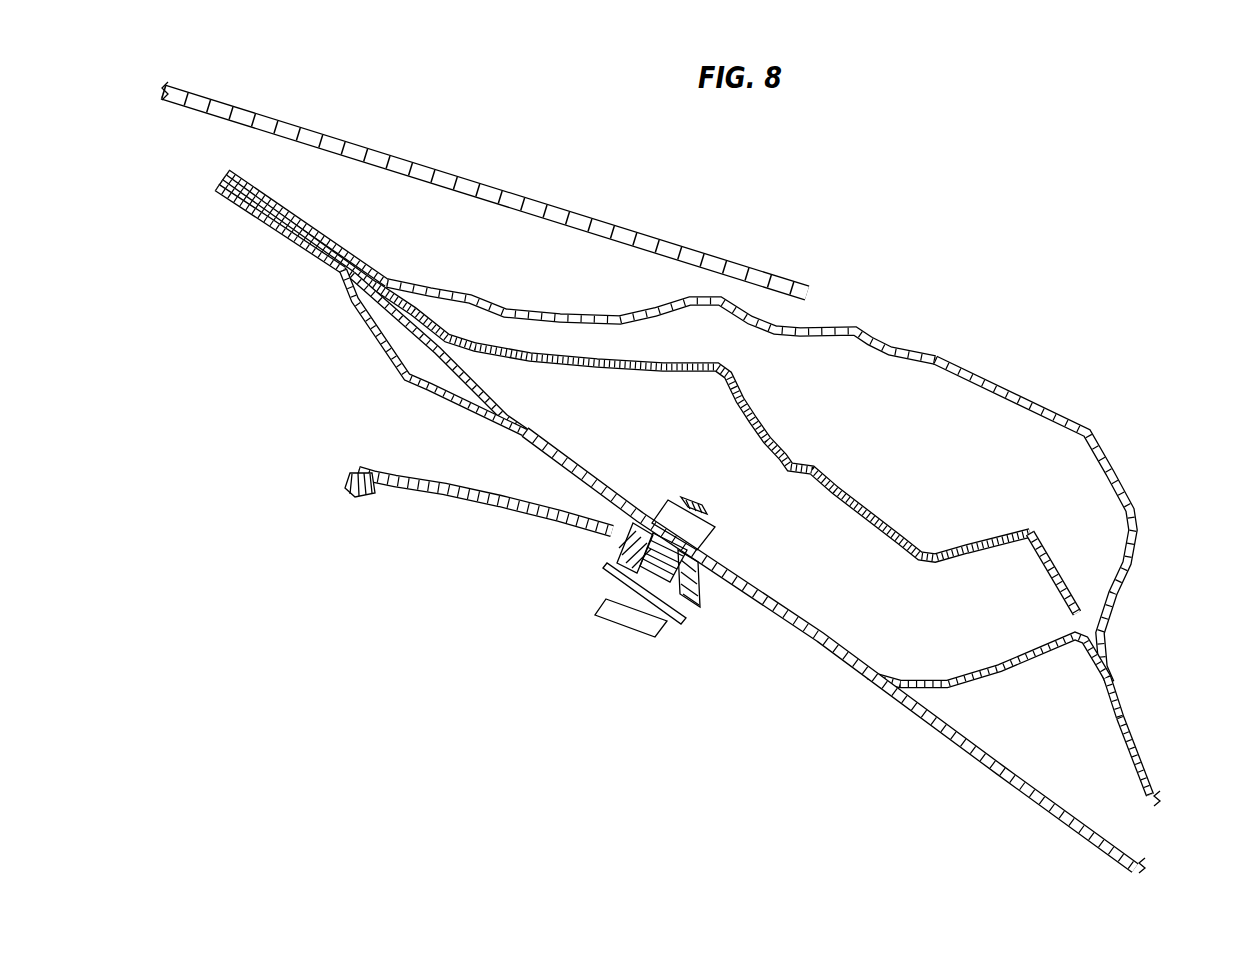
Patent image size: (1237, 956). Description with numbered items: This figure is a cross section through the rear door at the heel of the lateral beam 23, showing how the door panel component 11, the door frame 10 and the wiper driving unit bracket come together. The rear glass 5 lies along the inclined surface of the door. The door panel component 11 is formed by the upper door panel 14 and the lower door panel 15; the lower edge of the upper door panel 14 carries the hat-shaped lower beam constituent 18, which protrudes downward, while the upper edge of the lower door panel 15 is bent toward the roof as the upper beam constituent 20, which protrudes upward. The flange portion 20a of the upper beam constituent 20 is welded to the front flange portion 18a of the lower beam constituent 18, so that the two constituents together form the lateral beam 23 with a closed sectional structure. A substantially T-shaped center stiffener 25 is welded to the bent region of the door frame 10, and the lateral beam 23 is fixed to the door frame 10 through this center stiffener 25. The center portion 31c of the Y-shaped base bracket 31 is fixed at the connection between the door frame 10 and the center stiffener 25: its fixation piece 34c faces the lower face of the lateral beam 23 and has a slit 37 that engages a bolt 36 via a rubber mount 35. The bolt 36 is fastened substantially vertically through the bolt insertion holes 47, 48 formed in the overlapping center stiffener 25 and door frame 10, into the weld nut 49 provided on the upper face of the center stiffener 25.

The rear glass 5 is at (688, 253).
The front flange portion 18a is at (268, 193).
The flange portion 20a is at (313, 235).
The lateral beam 23 is at (997, 269).
The upper beam constituent 20 is at (916, 357).
The lower beam constituent 18 is at (882, 515).
The door panel component 11 is at (1135, 308).
The lower door panel 15 is at (995, 384).
The upper door panel 14 is at (1036, 527).
The center stiffener 25 is at (1002, 677).
The door frame 10 is at (910, 713).
The center portion 31c is at (372, 474).
The base bracket 31 is at (475, 468).
The weld nut 49 is at (700, 538).
The bolt insertion hole 47 is at (672, 532).
The fixation piece 34c is at (614, 545).
The slit 37 is at (620, 580).
The bolt insertion hole 48 is at (687, 600).
The rubber mount 35 is at (668, 623).
The bolt 36 is at (641, 625).